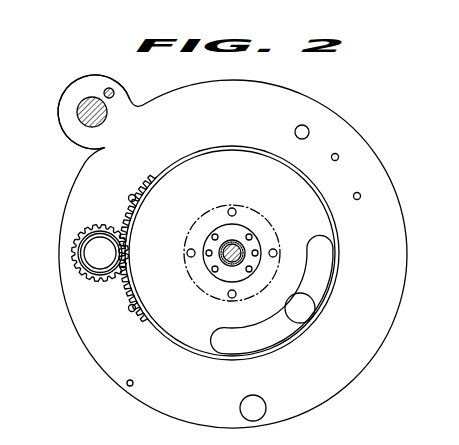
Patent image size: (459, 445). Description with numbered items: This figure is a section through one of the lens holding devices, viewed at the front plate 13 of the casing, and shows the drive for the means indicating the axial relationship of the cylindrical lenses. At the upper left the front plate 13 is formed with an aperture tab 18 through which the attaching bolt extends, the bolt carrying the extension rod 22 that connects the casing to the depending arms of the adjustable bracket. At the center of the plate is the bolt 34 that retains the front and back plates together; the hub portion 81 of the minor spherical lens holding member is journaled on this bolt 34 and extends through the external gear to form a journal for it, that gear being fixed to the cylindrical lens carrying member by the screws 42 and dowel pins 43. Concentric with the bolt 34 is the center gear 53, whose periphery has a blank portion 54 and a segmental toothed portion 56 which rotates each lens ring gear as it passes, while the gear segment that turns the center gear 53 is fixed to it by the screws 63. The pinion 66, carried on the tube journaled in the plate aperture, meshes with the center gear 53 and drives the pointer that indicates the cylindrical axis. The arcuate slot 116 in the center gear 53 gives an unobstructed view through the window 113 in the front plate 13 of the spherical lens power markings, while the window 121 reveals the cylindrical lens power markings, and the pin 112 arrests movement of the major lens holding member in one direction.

The front plate 13 is at (313, 100).
The aperture tab 18 is at (90, 134).
The extension rod 22 is at (106, 118).
The bolt 34 is at (241, 249).
The screws 42 is at (252, 238).
The dowel pins 43 is at (207, 250).
The center gear 53 is at (242, 150).
The blank portion 54 is at (338, 227).
The segmental toothed portion 56 is at (139, 214).
The screws 63 is at (187, 252).
The pinion 66 is at (114, 280).
The hub portion 81 is at (226, 257).
The pin 112 is at (131, 385).
The window 113 is at (314, 298).
The arcuate slot 116 is at (240, 327).
The window 121 is at (263, 397).